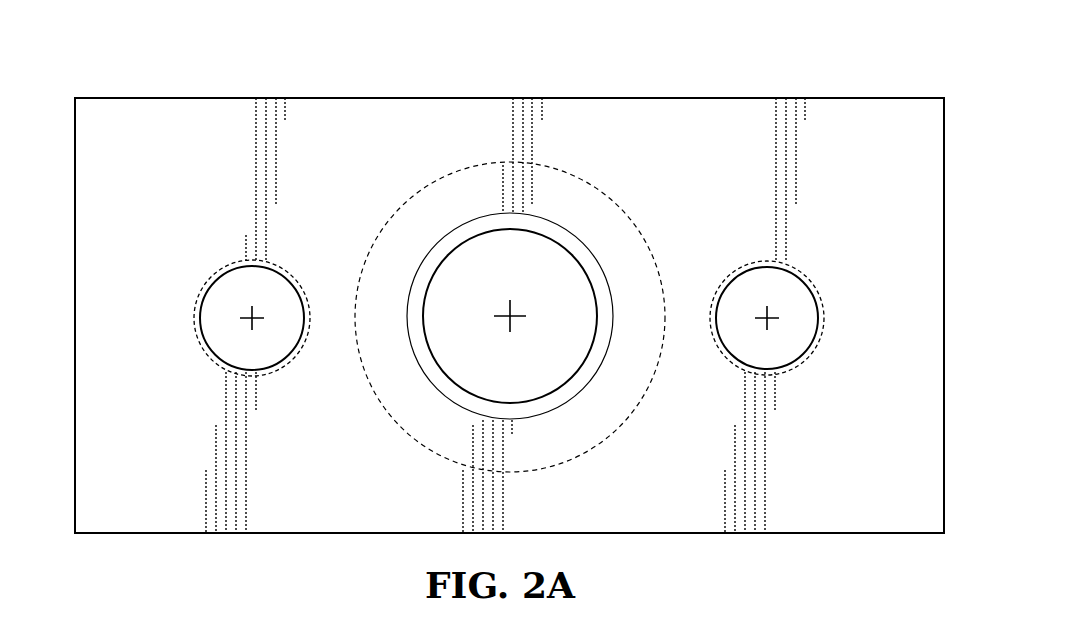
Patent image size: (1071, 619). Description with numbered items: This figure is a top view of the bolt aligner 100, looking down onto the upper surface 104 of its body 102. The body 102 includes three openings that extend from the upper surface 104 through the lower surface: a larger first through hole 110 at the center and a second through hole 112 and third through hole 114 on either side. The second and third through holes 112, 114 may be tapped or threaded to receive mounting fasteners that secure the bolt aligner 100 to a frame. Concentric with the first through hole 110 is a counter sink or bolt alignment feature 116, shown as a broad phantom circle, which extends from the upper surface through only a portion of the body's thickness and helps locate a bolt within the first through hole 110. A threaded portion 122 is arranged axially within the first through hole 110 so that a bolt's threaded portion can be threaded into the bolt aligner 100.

The bolt aligner 100 is at (104, 66).
The body 102 is at (868, 74).
The upper surface 104 is at (180, 124).
The first through hole 110 is at (452, 283).
The second through hole 112 is at (218, 283).
The third through hole 114 is at (805, 283).
The bolt alignment feature 116 is at (615, 215).
The threaded portion 122 is at (470, 232).